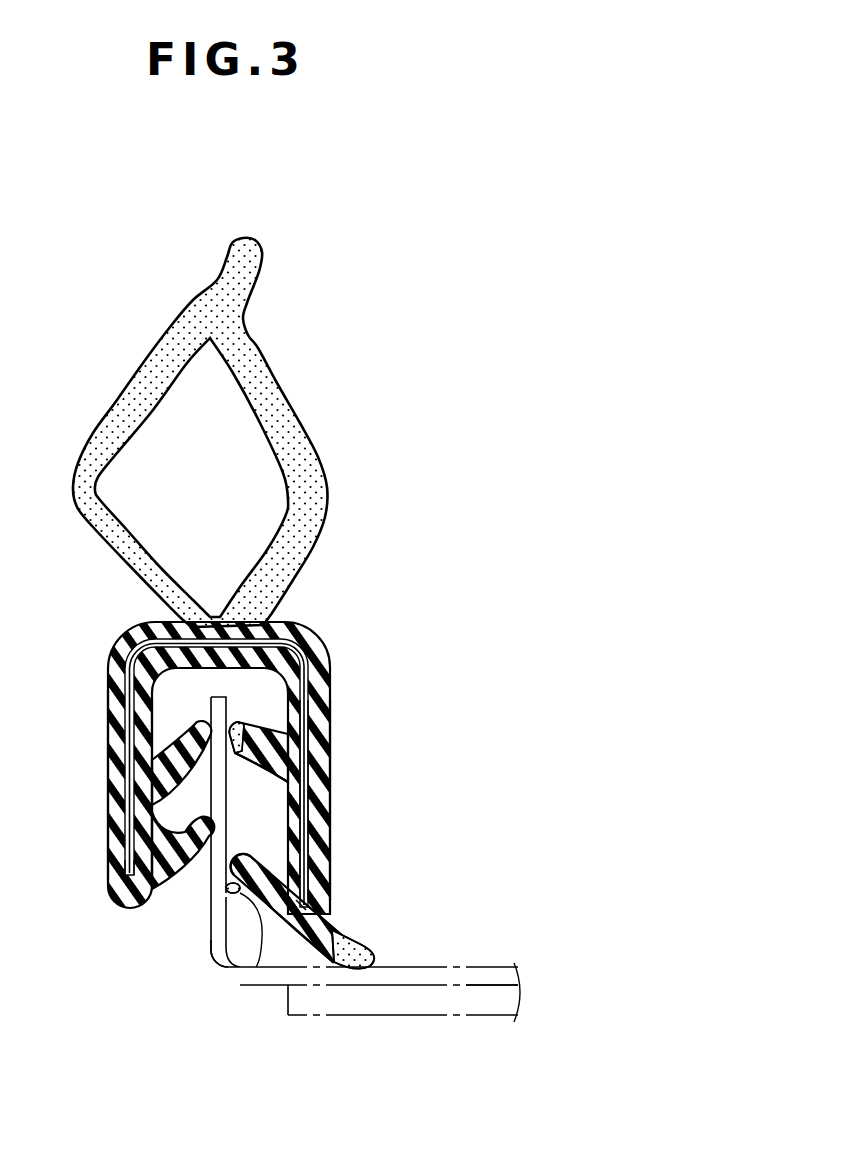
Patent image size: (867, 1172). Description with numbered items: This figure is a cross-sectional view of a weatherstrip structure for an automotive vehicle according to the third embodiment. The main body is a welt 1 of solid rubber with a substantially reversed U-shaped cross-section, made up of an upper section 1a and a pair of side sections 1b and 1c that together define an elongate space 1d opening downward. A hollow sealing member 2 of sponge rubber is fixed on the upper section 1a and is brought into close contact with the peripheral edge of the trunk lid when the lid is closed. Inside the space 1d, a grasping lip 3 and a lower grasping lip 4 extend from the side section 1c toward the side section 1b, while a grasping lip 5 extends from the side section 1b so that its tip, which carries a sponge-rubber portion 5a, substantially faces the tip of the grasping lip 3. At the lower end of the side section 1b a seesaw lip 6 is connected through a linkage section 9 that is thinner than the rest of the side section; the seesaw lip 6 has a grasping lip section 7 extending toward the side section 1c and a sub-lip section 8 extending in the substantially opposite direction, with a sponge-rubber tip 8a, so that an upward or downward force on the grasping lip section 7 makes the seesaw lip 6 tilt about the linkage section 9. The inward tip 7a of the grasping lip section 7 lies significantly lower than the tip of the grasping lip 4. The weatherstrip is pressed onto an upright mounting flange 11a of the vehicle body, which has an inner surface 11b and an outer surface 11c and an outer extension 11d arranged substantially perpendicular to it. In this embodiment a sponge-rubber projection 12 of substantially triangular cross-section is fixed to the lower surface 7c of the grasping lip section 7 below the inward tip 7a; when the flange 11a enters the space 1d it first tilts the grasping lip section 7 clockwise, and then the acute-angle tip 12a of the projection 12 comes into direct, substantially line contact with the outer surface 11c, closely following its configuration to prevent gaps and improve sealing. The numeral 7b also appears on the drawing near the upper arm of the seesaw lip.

The welt 1 is at (331, 706).
The upper section 1a is at (138, 640).
The side section 1b is at (327, 739).
The side section 1c is at (110, 781).
The space 1d is at (167, 683).
The hollow sealing member 2 is at (318, 482).
The grasping lip 3 is at (178, 755).
The grasping lip 4 is at (180, 834).
The grasping lip 5 is at (244, 726).
The portion 5a is at (235, 758).
The seesaw lip 6 is at (298, 946).
The grasping lip section 7 is at (262, 918).
The inward tip 7a is at (210, 890).
The upper arm of seal lip 7b is at (290, 855).
The lower surface 7c is at (278, 935).
The sub-lip section 8 is at (334, 924).
The tip 8a is at (378, 951).
The linkage section 9 is at (279, 911).
The upright mounting flange 11a is at (216, 696).
The inner surface 11b is at (232, 771).
The outer surface 11c is at (320, 808).
The outer extension 11d is at (470, 970).
The projection 12 is at (252, 976).
The tip 12a is at (213, 960).